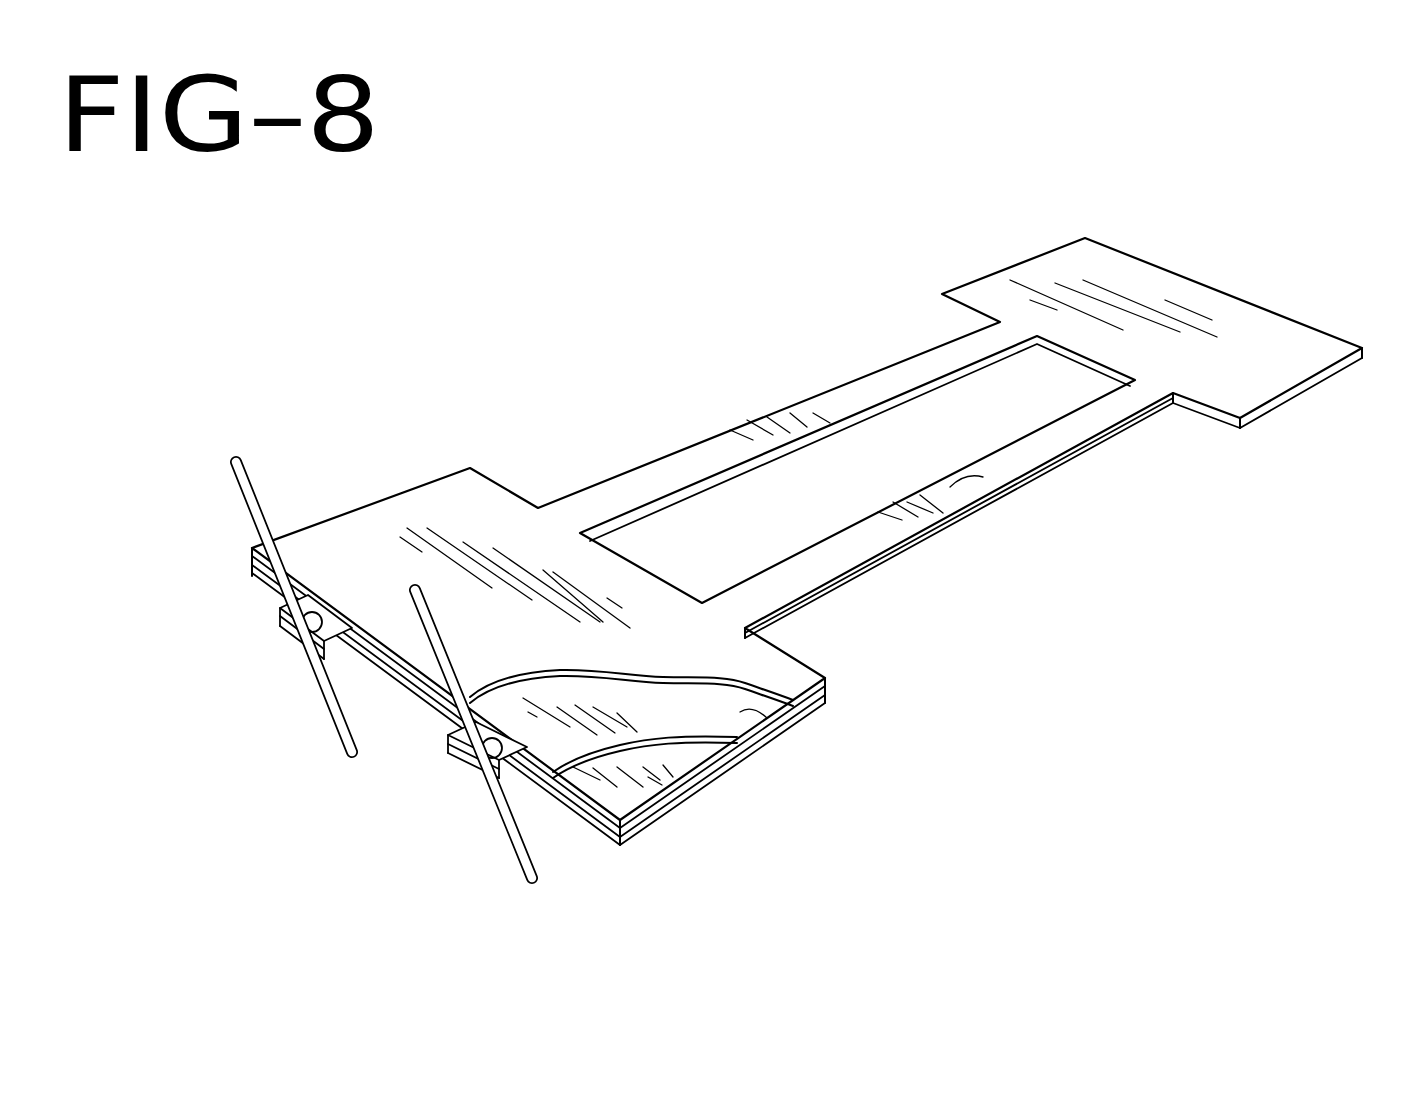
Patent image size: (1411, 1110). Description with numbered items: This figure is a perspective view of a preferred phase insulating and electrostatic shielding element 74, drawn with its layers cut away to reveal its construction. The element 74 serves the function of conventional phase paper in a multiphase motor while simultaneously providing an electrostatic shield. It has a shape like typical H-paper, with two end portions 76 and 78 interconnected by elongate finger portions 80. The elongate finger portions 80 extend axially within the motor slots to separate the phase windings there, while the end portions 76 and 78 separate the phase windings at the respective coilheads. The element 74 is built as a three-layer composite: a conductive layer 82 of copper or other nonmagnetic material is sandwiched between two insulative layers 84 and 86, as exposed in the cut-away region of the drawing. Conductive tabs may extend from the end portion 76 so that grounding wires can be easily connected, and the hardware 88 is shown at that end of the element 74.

The phase insulating and electrostatic shielding element 74 is at (1172, 483).
The first end portion 76 is at (441, 511).
The second end portion 78 is at (1262, 309).
The elongate finger portions 80 is at (782, 418).
The conductive layer 82 is at (778, 727).
The first insulative layer 84 is at (793, 675).
The second insulative layer 86 is at (672, 785).
The locating pin 88 is at (338, 595).